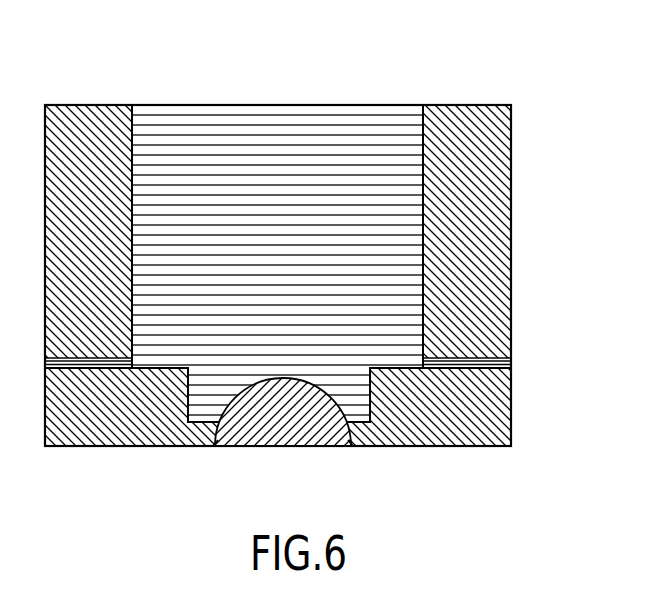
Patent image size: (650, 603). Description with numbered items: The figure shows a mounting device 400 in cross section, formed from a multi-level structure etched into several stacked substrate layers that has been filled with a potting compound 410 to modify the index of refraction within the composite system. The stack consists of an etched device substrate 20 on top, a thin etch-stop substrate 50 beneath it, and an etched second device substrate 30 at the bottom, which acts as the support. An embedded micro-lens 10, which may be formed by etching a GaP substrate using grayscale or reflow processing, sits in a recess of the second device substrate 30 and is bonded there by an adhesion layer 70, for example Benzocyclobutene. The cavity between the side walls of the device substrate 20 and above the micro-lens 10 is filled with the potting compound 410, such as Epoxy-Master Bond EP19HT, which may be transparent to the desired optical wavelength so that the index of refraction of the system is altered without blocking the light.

The mounting device 400 is at (435, 88).
The potting compound 410 is at (290, 104).
The device substrate 20 is at (512, 228).
The etch-stop substrate 50 is at (512, 363).
The second device substrate 30 is at (472, 447).
The micro-lens 10 is at (284, 430).
The adhesion layer 70 is at (210, 447).